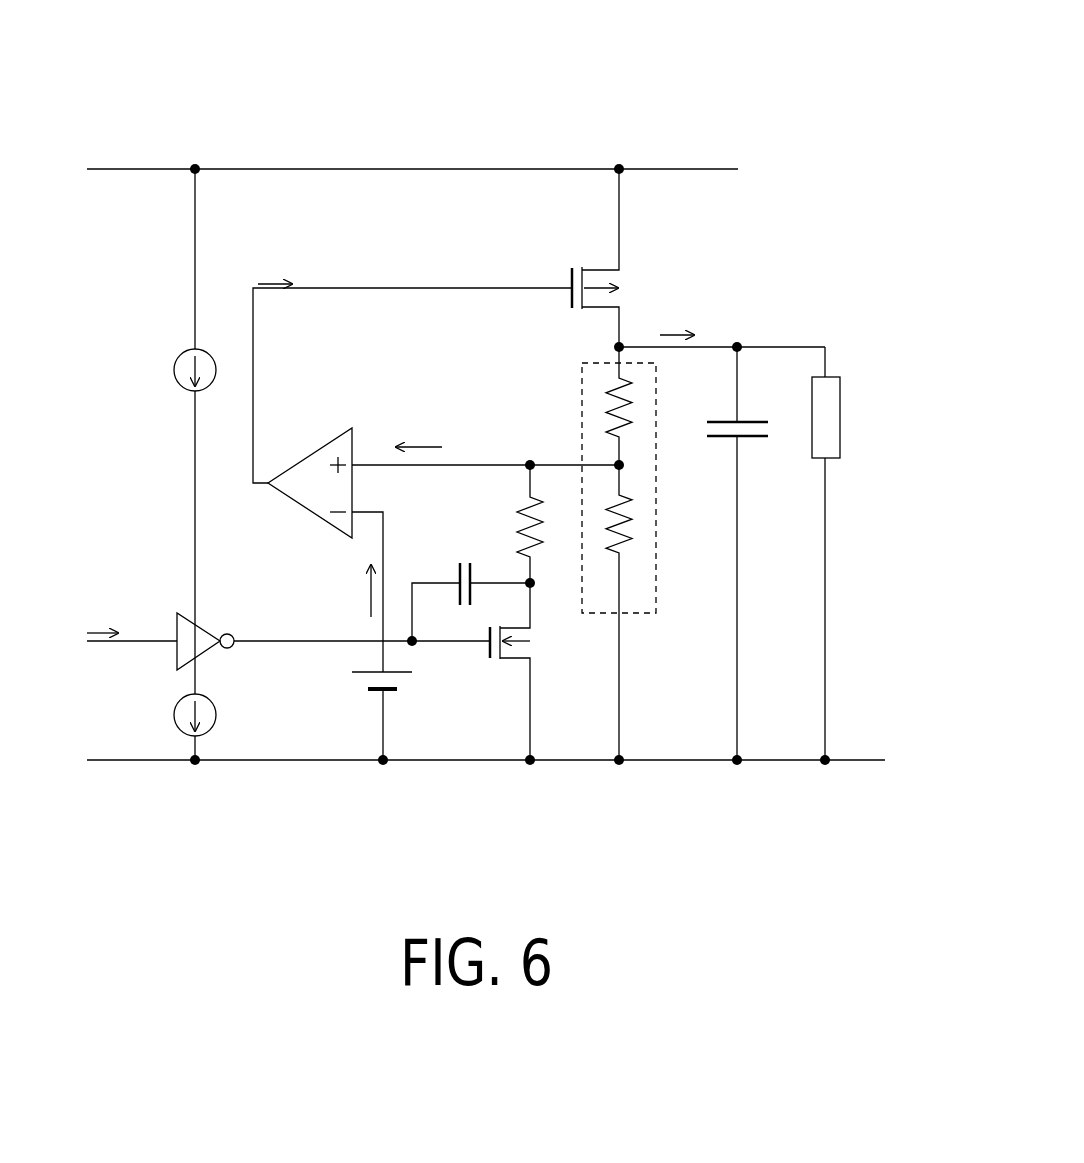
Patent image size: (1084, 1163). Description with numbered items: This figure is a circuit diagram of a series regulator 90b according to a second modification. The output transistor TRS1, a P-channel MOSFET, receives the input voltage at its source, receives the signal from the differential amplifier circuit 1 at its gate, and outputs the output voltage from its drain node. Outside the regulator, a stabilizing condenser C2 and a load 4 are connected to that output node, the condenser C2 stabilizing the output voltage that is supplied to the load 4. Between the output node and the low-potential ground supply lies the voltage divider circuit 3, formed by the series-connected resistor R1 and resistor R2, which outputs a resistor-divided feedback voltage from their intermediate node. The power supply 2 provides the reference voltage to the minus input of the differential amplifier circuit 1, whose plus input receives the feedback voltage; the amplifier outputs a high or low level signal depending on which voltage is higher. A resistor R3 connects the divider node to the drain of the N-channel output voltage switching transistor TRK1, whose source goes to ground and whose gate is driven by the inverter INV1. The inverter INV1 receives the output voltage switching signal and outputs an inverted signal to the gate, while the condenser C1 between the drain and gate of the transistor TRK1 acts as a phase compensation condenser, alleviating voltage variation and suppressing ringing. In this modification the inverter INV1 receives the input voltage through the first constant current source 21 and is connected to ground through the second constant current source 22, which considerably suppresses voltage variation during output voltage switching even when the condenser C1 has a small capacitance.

The series regulator 90b is at (807, 125).
The differential amplifier circuit 1 is at (312, 518).
The power supply 2 is at (356, 680).
The voltage divider circuit 3 is at (646, 614).
The load 4 is at (842, 382).
The first constant current source 21 is at (182, 385).
The second constant current source 22 is at (215, 700).
The output transistor TRS1 is at (625, 280).
The output voltage switching transistor TRK1 is at (495, 674).
The resistor R1 is at (606, 408).
The resistor R2 is at (630, 548).
The resistor R3 is at (516, 512).
The condenser C1 is at (464, 560).
The condenser C2 is at (722, 442).
The inverter INV1 is at (175, 665).